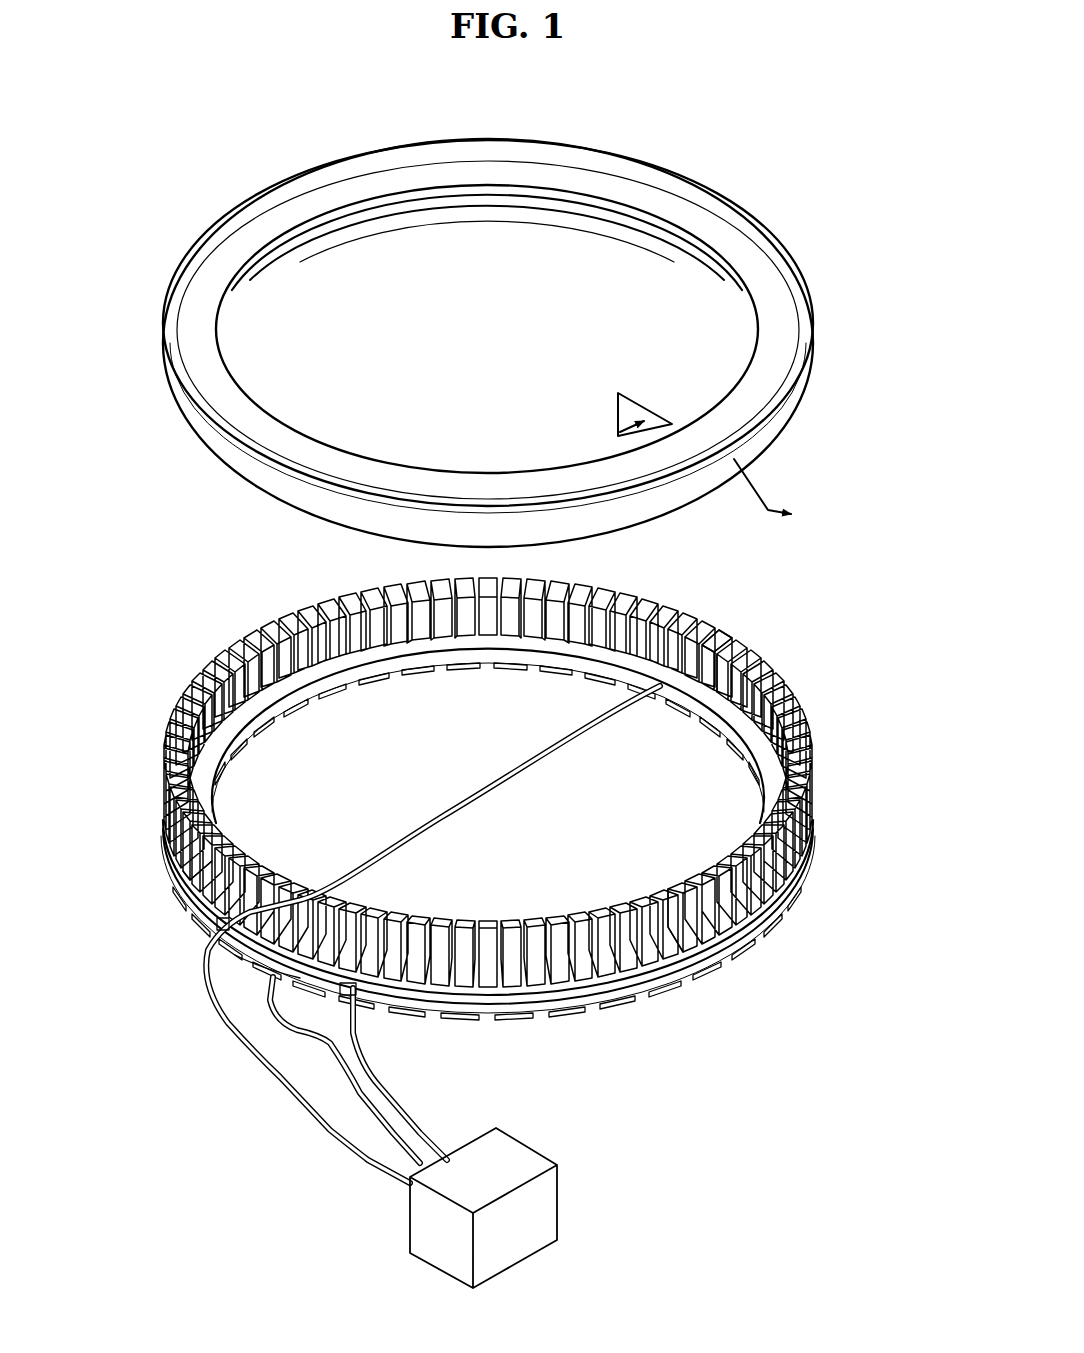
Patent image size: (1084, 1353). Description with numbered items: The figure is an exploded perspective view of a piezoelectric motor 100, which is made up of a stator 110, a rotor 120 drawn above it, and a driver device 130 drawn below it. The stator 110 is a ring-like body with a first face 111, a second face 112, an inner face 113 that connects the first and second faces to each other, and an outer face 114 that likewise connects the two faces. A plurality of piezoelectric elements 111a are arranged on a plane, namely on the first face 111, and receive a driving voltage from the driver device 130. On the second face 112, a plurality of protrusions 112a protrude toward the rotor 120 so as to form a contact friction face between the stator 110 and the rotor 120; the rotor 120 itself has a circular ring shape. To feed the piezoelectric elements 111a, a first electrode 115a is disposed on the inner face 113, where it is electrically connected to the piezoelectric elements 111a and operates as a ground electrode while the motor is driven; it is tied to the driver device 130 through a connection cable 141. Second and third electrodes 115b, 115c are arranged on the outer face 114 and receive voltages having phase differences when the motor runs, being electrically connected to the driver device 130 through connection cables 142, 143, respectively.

The piezoelectric motor 100 is at (790, 152).
The stator 110 is at (495, 836).
The first face 111 is at (488, 888).
The piezoelectric elements 111a is at (582, 1014).
The second face 112 is at (525, 977).
The protrusions 112a is at (723, 643).
The inner face 113 is at (455, 652).
The outer face 114 is at (267, 953).
The first electrode 115a is at (733, 650).
The second electrode 115b is at (190, 888).
The third electrode 115c is at (690, 975).
The rotor 120 is at (790, 313).
The driver device 130 is at (545, 1203).
The connection cable 141 is at (357, 1117).
The connection cable 142 is at (293, 1100).
The connection cable 143 is at (393, 1107).